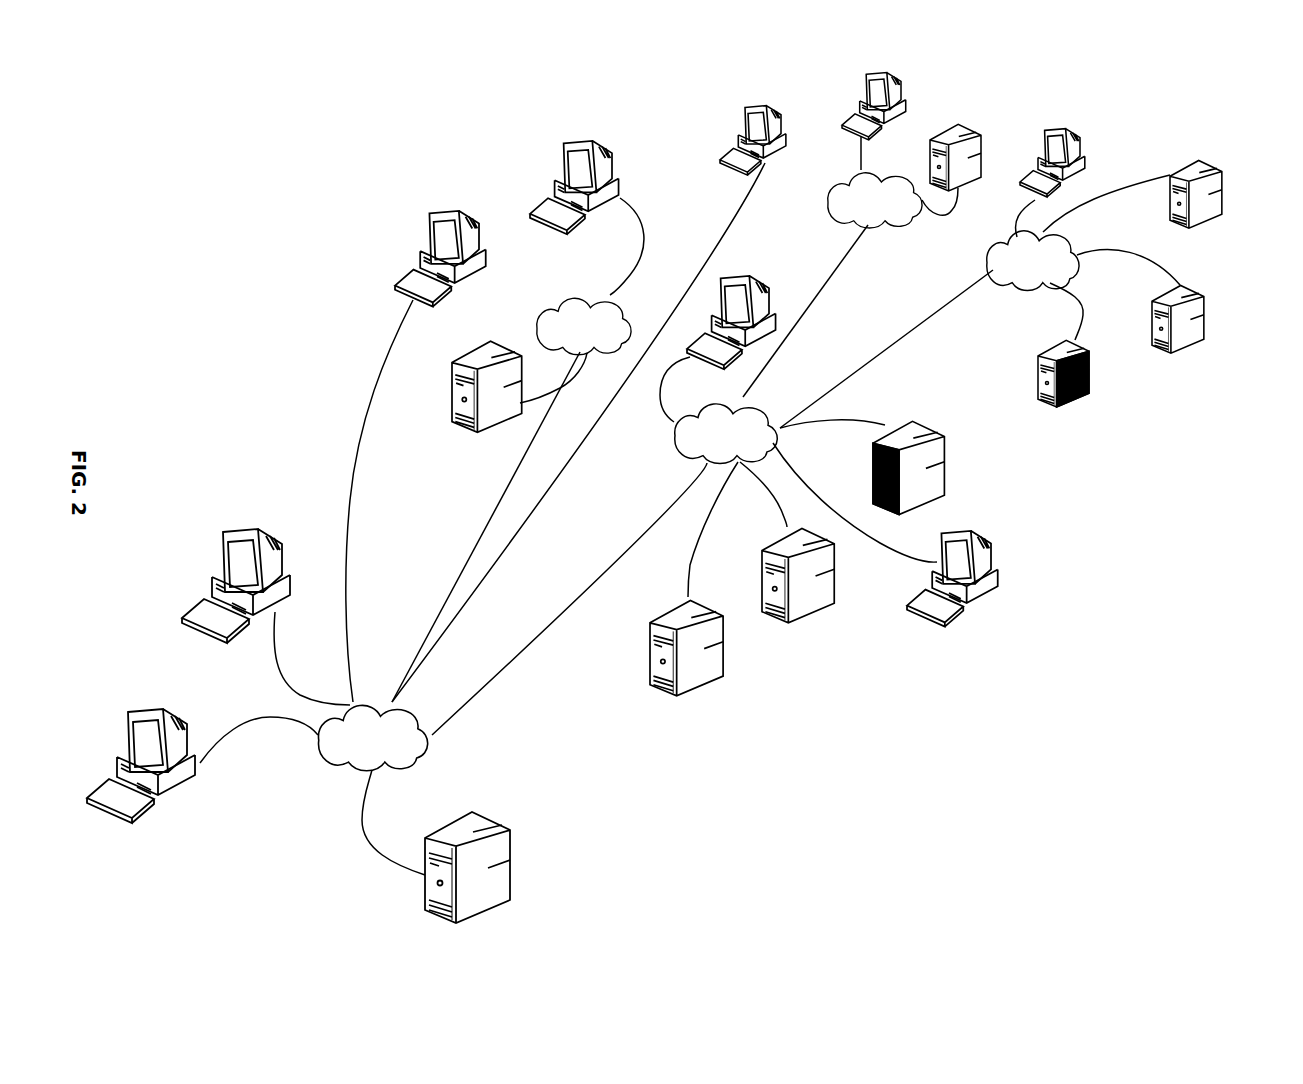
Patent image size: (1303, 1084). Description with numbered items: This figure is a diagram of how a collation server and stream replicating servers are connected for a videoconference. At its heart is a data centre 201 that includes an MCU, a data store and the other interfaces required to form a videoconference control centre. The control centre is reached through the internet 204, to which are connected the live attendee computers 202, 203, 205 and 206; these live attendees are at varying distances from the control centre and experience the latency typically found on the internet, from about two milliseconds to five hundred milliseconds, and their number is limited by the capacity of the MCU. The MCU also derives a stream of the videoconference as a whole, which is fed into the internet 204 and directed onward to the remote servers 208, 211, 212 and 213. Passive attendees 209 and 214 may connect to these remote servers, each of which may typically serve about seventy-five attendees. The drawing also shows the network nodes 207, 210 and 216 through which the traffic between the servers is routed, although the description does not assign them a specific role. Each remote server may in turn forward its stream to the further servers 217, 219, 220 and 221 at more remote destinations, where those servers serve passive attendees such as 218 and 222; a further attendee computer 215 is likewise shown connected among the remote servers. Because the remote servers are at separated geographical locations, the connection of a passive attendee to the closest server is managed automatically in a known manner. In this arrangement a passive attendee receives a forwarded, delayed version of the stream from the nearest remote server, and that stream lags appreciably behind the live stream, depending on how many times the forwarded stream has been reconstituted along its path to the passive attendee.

The data centre 201 is at (507, 873).
The live attendee computer 202 is at (173, 795).
The live attendee computer 203 is at (282, 607).
The internet 204 is at (340, 773).
The live attendee computer 205 is at (423, 222).
The live attendee computer 206 is at (740, 135).
The network 207 is at (533, 320).
The remote server 208 is at (452, 423).
The passive attendee 209 is at (562, 153).
The network 210 is at (665, 458).
The remote server 211 is at (668, 607).
The remote server 212 is at (822, 610).
The remote server 213 is at (945, 463).
The passive attendee 214 is at (753, 285).
The client computer 215 is at (997, 580).
The network 216 is at (878, 223).
The further server 217 is at (982, 142).
The passive attendee 218 is at (905, 102).
The further server 219 is at (1088, 390).
The further server 220 is at (1198, 290).
The further server 221 is at (1215, 162).
The passive attendee 222 is at (1070, 135).